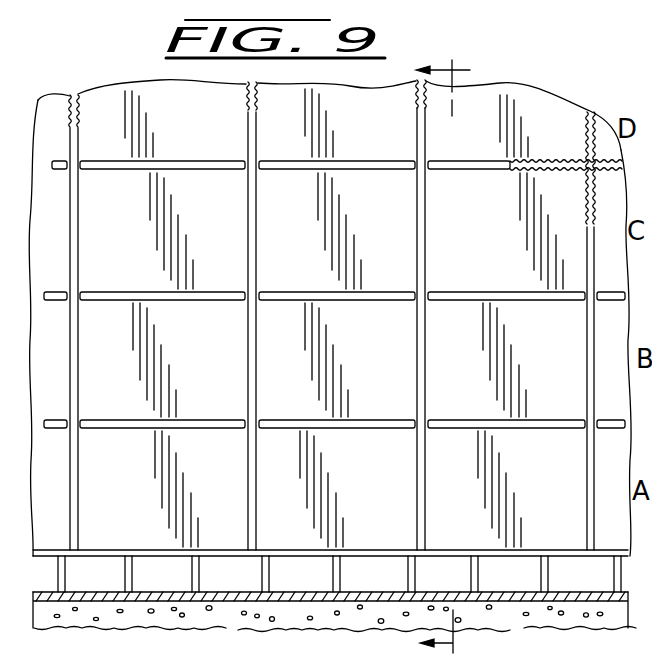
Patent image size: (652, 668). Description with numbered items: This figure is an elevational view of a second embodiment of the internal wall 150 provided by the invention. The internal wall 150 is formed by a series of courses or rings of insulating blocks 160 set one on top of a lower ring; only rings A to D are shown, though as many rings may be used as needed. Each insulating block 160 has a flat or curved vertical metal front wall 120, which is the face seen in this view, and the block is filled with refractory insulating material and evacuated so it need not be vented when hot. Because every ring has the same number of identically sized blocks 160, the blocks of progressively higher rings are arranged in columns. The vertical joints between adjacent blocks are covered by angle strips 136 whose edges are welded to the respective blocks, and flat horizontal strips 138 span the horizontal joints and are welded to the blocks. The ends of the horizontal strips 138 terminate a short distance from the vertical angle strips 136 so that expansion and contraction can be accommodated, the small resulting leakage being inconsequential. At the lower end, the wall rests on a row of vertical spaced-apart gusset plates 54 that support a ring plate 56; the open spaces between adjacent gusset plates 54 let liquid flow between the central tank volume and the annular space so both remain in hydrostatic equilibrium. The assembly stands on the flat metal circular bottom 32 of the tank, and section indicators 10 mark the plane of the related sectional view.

The section line 10 is at (450, 354).
The flat metal circular bottom 32 is at (512, 600).
The gusset plates 54 is at (338, 573).
The ring plate 56 is at (226, 556).
The front wall 120 is at (140, 225).
The angle strip 136 is at (257, 250).
The horizontal strips 138 is at (345, 160).
The internal wall 150 is at (560, 90).
The insulating block 160 is at (111, 105).